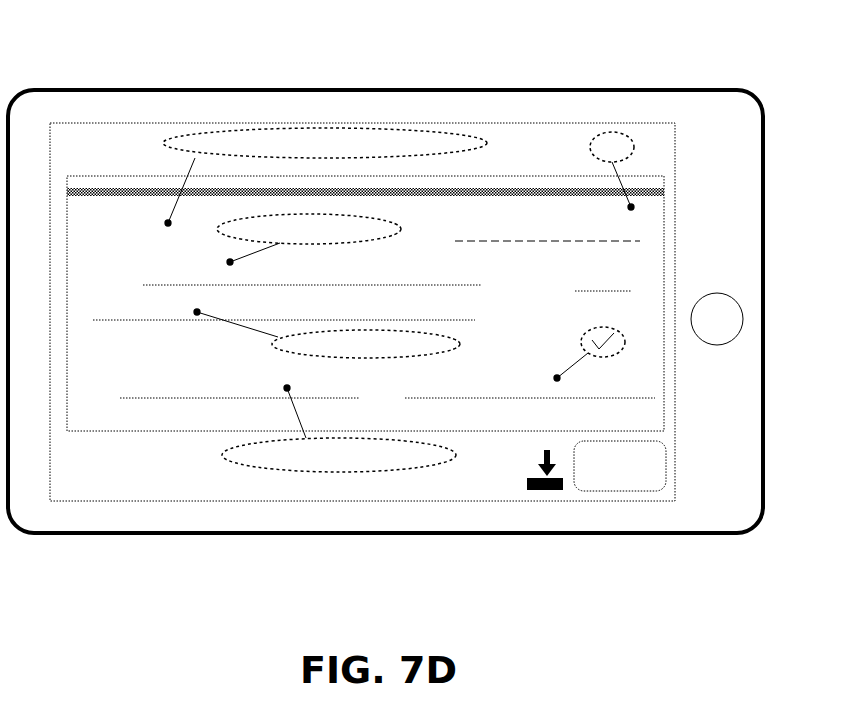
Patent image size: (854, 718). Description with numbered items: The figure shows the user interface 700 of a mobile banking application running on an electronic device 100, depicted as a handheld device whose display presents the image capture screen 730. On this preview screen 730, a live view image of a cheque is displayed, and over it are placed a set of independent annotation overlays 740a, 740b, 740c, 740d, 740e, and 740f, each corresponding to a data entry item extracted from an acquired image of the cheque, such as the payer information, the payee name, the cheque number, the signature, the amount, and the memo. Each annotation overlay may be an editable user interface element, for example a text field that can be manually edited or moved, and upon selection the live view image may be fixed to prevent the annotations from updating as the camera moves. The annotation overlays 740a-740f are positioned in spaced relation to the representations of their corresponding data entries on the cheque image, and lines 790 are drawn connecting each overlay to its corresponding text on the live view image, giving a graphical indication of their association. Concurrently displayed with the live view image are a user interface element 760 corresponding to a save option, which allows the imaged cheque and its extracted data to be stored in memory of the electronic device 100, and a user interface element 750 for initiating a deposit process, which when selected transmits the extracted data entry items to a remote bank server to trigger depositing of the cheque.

The electronic device 100 is at (112, 90).
The user interface 700 is at (666, 123).
The image capture screen 730 is at (106, 480).
The lines 790 is at (174, 203).
The annotation overlay 740a is at (395, 128).
The annotation overlay 740b is at (343, 243).
The annotation overlay 740c is at (607, 128).
The annotation overlay 740d is at (603, 357).
The annotation overlay 740e is at (340, 358).
The annotation overlay 740f is at (222, 452).
The user interface element 750 is at (620, 492).
The user interface element 760 is at (535, 492).